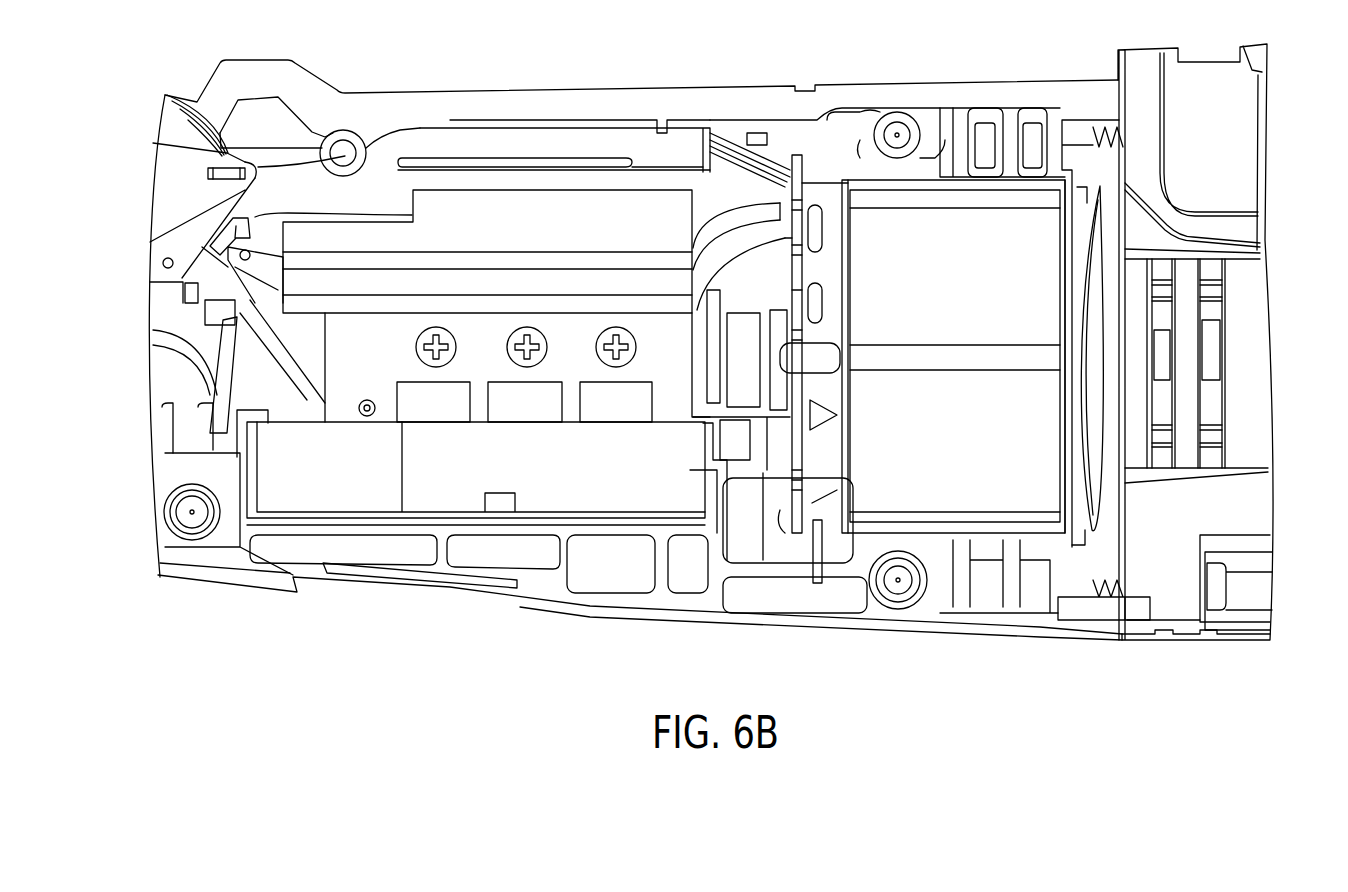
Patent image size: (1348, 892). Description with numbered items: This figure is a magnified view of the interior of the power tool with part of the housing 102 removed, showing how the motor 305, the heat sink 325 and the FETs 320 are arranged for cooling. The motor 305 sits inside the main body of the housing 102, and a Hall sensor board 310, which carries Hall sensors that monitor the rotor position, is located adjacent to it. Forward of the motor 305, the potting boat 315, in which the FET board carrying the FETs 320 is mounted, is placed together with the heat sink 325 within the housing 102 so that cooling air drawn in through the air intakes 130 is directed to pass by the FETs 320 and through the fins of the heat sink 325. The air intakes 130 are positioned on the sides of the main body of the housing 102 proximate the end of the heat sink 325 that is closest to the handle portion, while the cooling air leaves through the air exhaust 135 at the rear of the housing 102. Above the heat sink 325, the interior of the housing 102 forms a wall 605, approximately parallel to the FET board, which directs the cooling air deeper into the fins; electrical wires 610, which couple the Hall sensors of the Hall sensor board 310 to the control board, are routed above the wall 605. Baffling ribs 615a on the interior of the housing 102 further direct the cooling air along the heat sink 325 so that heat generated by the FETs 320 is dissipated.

The housing 102 is at (907, 90).
The air intake 130 is at (215, 275).
The air exhaust 135 is at (1207, 355).
The motor 305 is at (963, 252).
The Hall sensor board 310 is at (793, 157).
The potting boat 315 is at (297, 482).
The FETs 320 is at (605, 405).
The heat sink 325 is at (478, 230).
The wall 605 is at (530, 163).
The electrical wires 610 is at (717, 133).
The baffling ribs 615a is at (242, 220).